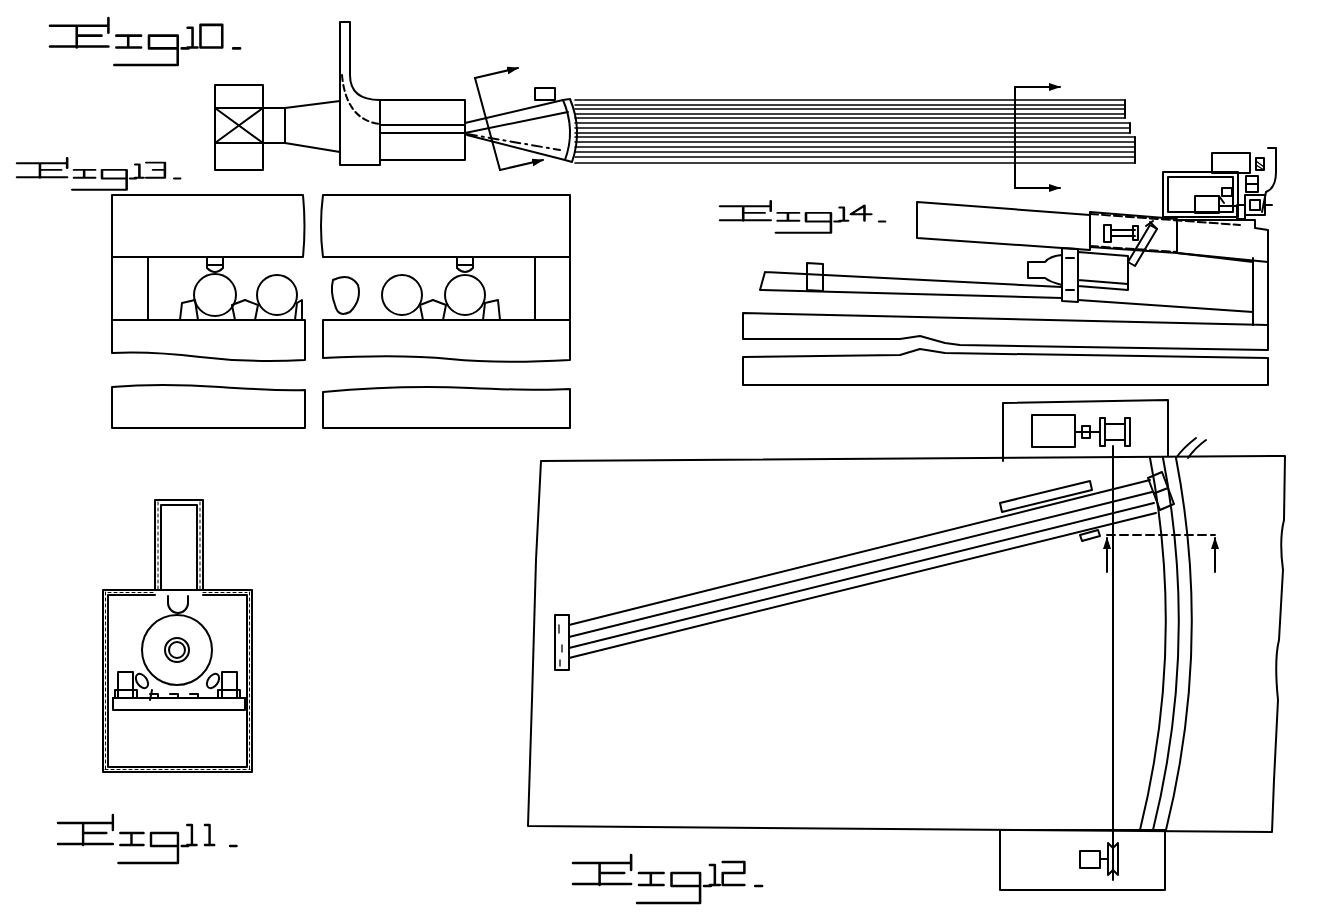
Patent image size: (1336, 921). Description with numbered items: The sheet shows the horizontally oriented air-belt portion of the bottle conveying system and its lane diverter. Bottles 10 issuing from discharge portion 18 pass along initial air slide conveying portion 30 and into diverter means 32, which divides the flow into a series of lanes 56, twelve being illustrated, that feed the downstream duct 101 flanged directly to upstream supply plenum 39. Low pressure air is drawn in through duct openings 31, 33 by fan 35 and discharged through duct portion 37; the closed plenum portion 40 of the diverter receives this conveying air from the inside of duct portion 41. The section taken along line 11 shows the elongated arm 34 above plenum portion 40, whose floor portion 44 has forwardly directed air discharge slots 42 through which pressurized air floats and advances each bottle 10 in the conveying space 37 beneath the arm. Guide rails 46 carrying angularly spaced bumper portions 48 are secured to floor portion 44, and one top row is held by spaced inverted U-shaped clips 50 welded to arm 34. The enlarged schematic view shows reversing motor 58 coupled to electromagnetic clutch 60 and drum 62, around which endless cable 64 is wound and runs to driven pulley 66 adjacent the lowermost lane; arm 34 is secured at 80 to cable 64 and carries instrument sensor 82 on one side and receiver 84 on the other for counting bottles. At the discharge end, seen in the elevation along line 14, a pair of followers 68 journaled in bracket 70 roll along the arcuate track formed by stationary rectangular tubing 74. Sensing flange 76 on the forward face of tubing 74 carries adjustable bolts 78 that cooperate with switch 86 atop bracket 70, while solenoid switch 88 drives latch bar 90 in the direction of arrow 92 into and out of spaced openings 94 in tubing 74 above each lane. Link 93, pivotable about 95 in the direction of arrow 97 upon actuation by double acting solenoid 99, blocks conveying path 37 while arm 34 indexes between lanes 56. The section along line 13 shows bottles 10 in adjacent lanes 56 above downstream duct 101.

In FIG. 11, the bottles 10 is at (208, 640).
In FIG. 14, the bottles 10 is at (1095, 292).
In FIG. 10, the section line 11— 11 is at (495, 129).
In FIG. 10, the section line 13— 13 is at (1014, 138).
In FIG. 12, the section line 14— 14 is at (1157, 569).
In FIG. 10, the discharge portion 18 is at (352, 54).
In FIG. 10, the initial air slide conveying portion 30 is at (420, 125).
In FIG. 10, the duct opening 31 is at (266, 96).
In FIG. 10, the diverter means 32 is at (517, 107).
In FIG. 12, the diverter means 32 is at (600, 563).
In FIG. 10, the duct opening 33 is at (268, 162).
In FIG. 10, the elongated arm 34 is at (553, 90).
In FIG. 11, the elongated arm 34 is at (178, 498).
In FIG. 12, the elongated arm 34 is at (725, 597).
In FIG. 14, the elongated arm 34 is at (985, 233).
In FIG. 10, the fan 35 is at (215, 130).
In FIG. 10, the duct portion 37 is at (307, 118).
In FIG. 11, the duct portion 37 is at (152, 700).
In FIG. 14, the duct portion 37 is at (960, 276).
In FIG. 10, the upstream supply plenum 39 is at (477, 150).
In FIG. 11, the closed plenum portion 40 is at (247, 739).
In FIG. 14, the closed plenum portion 40 is at (972, 305).
In FIG. 10, the duct portion 41 is at (398, 106).
In FIG. 11, the air discharge slots 42 is at (176, 700).
In FIG. 11, the floor portion 44 is at (216, 700).
In FIG. 11, the guide rails 46 is at (240, 685).
In FIG. 11, the bumper portions 48 is at (216, 680).
In FIG. 11, the inverted U-shaped clips 50 is at (190, 601).
In FIG. 14, the inverted U-shaped clips 50 is at (1062, 298).
In FIG. 10, the lanes 56 is at (766, 100).
In FIG. 13, the lanes 56 is at (262, 275).
In FIG. 12, the reversing motor 58 is at (1040, 447).
In FIG. 12, the electromagnetic clutch 60 is at (1003, 406).
In FIG. 12, the drum 62 is at (1130, 426).
In FIG. 12, the endless cable 64 is at (1110, 690).
In FIG. 12, the driven pulley 66 is at (1118, 865).
In FIG. 12, the followers 68 is at (1168, 488).
In FIG. 14, the followers 68 is at (1265, 184).
In FIG. 12, the bracket 70 is at (1152, 510).
In FIG. 14, the bracket 70 is at (1168, 174).
In FIG. 12, the rectangular tubing 74 is at (1186, 657).
In FIG. 14, the rectangular tubing 74 is at (1265, 228).
In FIG. 14, the sensing flange 76 is at (1278, 187).
In FIG. 14, the adjustable bolt 78 is at (1260, 157).
In FIG. 12, the cable attachment 80 is at (1114, 496).
In FIG. 12, the instrument sensor 82 is at (1060, 500).
In FIG. 12, the receiver 84 is at (1083, 537).
In FIG. 14, the switch 86 is at (1225, 153).
In FIG. 14, the solenoid switch 88 is at (1207, 214).
In FIG. 14, the latch bar 90 is at (1272, 206).
In FIG. 14, the arrow 92 is at (1225, 186).
In FIG. 14, the link 93 is at (1140, 268).
In FIG. 14, the spaced openings 94 is at (1242, 220).
In FIG. 14, the pivot 95 is at (1162, 255).
In FIG. 14, the arrow 97 is at (1122, 248).
In FIG. 14, the double acting solenoid 99 is at (1112, 223).
In FIG. 13, the downstream duct 101 is at (437, 420).